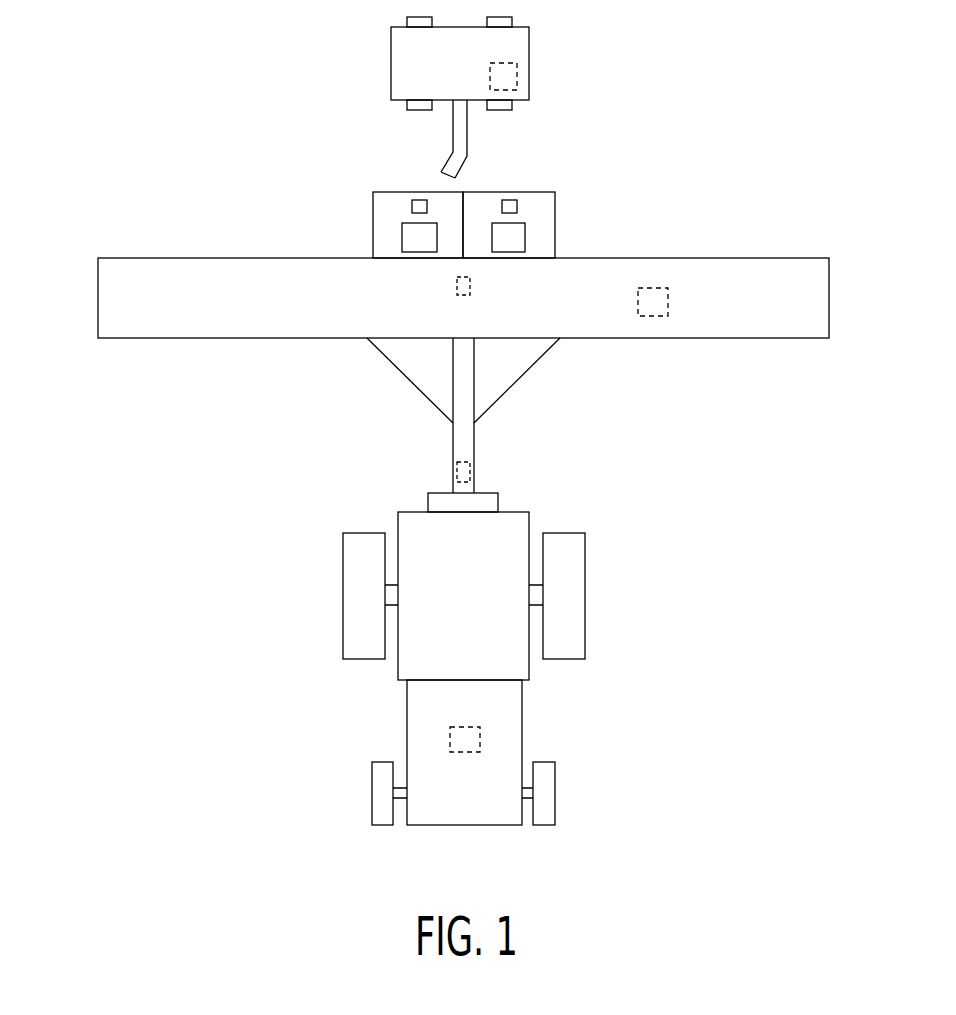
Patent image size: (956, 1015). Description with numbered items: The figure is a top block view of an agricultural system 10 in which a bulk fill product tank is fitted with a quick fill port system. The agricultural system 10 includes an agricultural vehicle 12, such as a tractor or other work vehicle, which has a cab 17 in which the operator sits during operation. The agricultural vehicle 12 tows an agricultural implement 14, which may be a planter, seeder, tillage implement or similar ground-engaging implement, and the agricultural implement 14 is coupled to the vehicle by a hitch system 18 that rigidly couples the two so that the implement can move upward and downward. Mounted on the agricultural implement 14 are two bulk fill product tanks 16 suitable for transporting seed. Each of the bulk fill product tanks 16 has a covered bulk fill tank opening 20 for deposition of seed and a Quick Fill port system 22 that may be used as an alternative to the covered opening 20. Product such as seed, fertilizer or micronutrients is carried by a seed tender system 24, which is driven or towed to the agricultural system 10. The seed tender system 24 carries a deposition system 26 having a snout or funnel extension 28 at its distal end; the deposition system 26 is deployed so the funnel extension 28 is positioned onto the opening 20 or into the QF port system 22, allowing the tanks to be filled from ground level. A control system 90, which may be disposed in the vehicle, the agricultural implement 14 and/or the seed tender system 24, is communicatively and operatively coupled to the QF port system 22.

The agricultural system 10 is at (731, 519).
The agricultural vehicle 12 is at (408, 733).
The agricultural implement 14 is at (120, 308).
The bulk fill product tanks 16 is at (373, 210).
The cab 17 is at (476, 609).
The hitch system 18 is at (463, 427).
The bulk fill tank opening 20 is at (402, 247).
The Quick Fill port system 22 is at (416, 200).
The seed tender system 24 is at (473, 62).
The deposition system 26 is at (453, 122).
The funnel extension 28 is at (474, 172).
The control system 90 is at (518, 72).